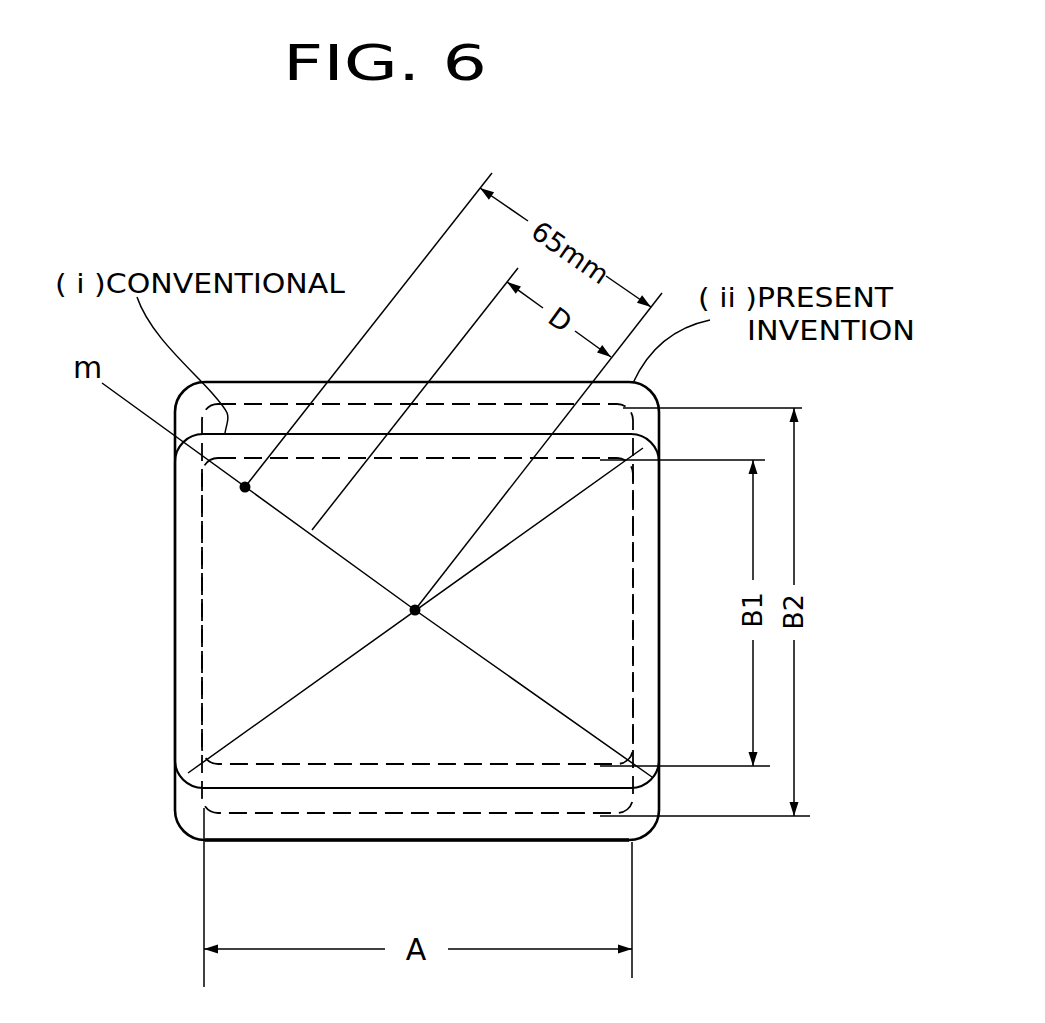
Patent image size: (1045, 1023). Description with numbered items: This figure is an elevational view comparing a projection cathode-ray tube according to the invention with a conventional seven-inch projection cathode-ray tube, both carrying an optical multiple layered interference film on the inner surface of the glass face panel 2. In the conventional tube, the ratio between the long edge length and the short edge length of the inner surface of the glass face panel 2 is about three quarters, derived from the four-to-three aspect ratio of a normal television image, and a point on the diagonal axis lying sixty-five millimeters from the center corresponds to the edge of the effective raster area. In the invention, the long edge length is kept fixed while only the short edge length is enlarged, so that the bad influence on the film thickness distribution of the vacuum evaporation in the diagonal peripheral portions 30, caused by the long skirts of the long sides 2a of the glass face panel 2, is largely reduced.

The glass face panel 2 is at (175, 611).
The long sides of the glass face panel 2a is at (292, 382).
The diagonal peripheral portions 30 is at (242, 496).